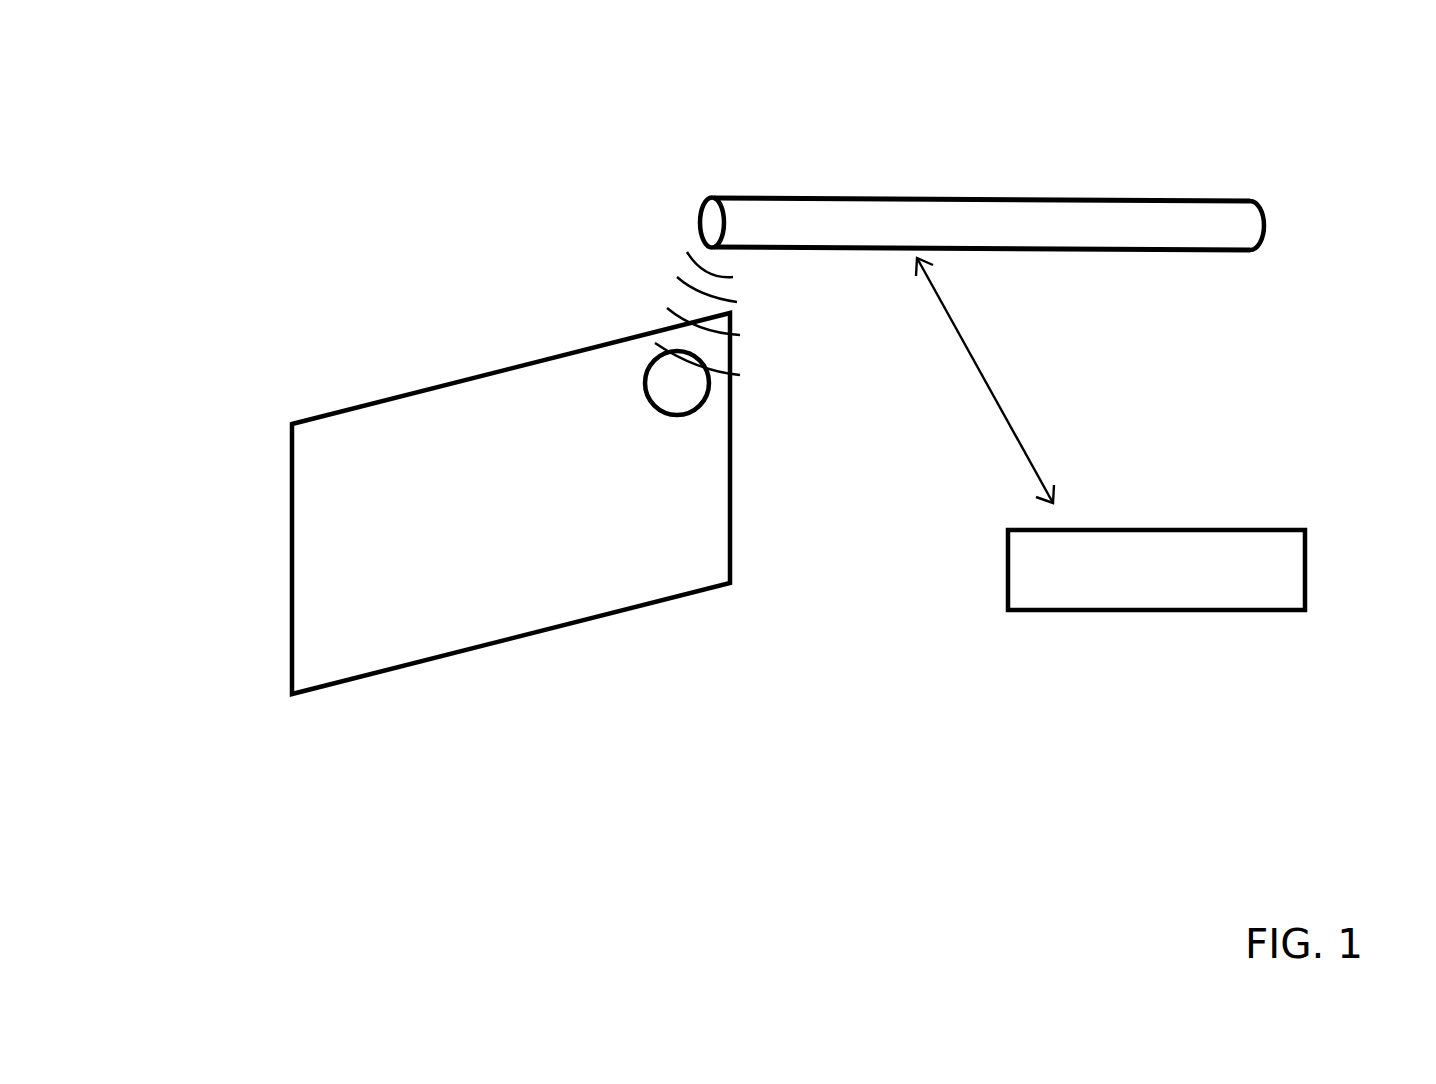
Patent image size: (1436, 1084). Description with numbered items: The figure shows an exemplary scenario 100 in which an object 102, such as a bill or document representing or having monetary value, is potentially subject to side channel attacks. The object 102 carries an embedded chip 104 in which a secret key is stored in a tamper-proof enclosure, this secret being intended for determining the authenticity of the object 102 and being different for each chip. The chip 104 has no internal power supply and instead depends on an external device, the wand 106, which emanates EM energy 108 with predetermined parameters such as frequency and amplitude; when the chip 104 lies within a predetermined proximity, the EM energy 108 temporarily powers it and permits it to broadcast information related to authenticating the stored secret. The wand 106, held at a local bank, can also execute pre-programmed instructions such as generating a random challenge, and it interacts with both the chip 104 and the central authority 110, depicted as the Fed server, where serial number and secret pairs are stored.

The exemplary scenario 100 is at (1241, 74).
The object 102 is at (378, 447).
The embedded chip 104 is at (643, 372).
The wand 106 is at (1042, 230).
The EM energy 108 is at (675, 277).
The central authority 110 is at (1153, 508).